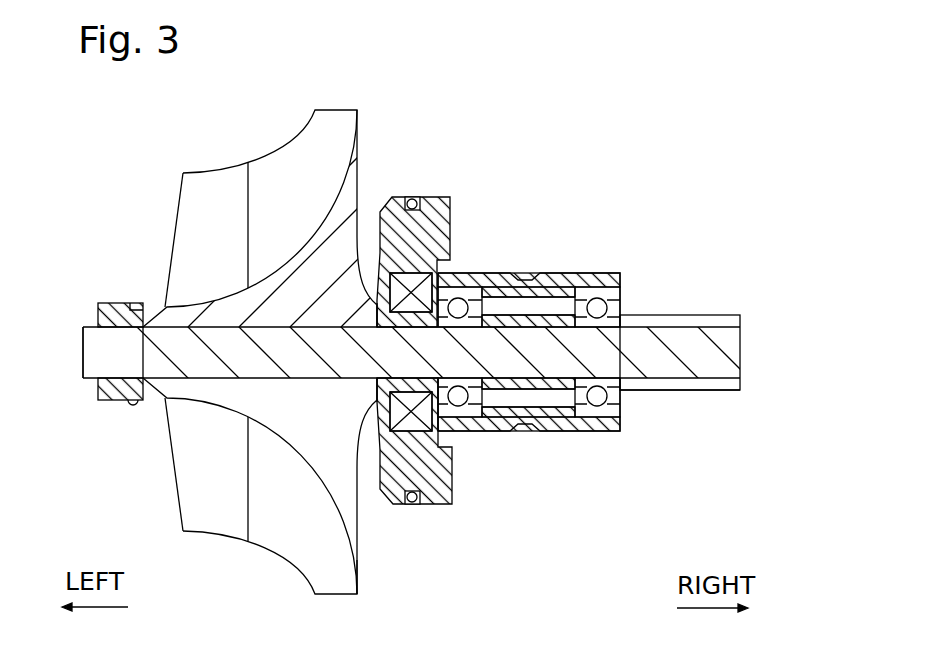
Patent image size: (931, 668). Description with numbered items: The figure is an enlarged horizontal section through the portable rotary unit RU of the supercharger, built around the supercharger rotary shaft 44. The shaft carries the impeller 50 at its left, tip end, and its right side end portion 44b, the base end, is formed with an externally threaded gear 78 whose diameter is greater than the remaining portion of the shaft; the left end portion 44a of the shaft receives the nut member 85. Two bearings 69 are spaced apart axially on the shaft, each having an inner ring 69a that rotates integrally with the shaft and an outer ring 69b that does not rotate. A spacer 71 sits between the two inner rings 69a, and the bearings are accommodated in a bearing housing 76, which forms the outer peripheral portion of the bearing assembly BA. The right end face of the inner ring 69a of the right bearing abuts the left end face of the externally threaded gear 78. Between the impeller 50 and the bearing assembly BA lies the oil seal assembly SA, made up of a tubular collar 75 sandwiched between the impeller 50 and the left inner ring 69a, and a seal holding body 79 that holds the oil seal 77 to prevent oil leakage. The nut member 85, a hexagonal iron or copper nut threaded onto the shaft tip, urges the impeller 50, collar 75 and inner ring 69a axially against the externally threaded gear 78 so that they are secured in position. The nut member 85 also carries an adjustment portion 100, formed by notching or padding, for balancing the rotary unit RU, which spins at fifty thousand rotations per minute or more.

The supercharger rotary shaft 44 is at (157, 367).
The shaft end portion 44a is at (104, 312).
The right side end portion (base end portion) 44b is at (693, 343).
The impeller 50 is at (358, 594).
The bearing 69 is at (598, 284).
The inner ring 69a is at (752, 198).
The outer ring 69b is at (648, 253).
The spacer 71 is at (558, 380).
The tubular collar 75 is at (380, 398).
The bearing housing 76 is at (590, 272).
The oil seal 77 is at (413, 423).
The externally threaded gear 78 is at (717, 388).
The seal holding body 79 is at (452, 470).
The nut member 85 is at (97, 308).
The adjustment portion 100 is at (97, 396).
The rotary unit RU is at (174, 159).
The bearing assembly BA is at (713, 148).
The oil seal assembly SA is at (577, 585).